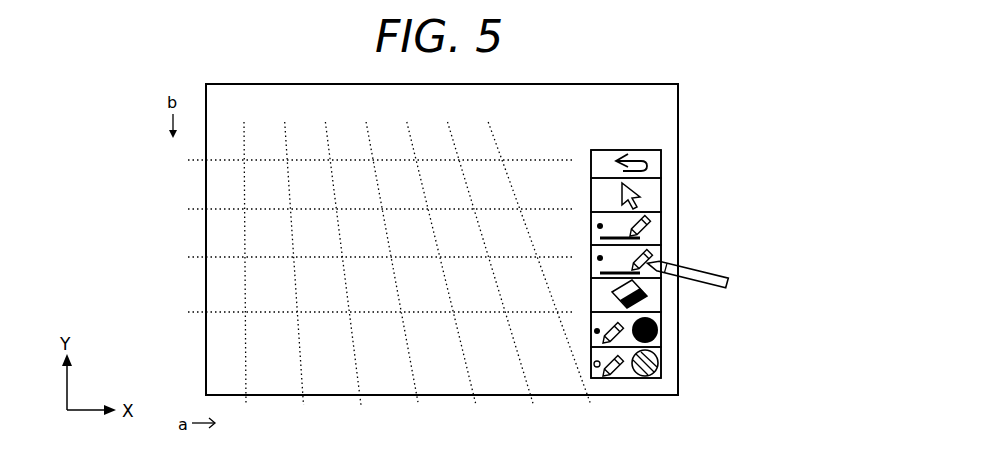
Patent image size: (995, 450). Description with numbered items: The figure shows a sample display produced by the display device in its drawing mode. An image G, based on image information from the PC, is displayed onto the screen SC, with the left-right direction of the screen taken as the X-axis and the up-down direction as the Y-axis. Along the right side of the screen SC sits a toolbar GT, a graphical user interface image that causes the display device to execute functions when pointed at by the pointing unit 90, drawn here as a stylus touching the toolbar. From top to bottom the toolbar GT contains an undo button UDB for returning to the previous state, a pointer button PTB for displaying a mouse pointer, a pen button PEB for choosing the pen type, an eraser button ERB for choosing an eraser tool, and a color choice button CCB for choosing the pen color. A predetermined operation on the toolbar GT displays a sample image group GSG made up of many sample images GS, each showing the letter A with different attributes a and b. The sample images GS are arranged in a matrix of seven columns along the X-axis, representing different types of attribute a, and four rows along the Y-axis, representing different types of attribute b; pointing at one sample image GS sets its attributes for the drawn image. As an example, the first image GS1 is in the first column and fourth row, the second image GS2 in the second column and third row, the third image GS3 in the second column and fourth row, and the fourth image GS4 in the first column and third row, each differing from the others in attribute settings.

The sample image GS is at (412, 142).
The sample image group GSG is at (349, 243).
The toolbar GT is at (670, 243).
The screen SC is at (665, 118).
The image G is at (684, 129).
The undo button UDB is at (662, 162).
The pointer button PTB is at (662, 197).
The pen button PEB is at (662, 262).
The pointing unit 90 is at (690, 267).
The eraser button ERB is at (662, 292).
The color choice button CCB is at (662, 326).
The first image GS1 is at (237, 325).
The second image GS2 is at (596, 248).
The third image GS3 is at (283, 330).
The fourth image GS4 is at (237, 271).